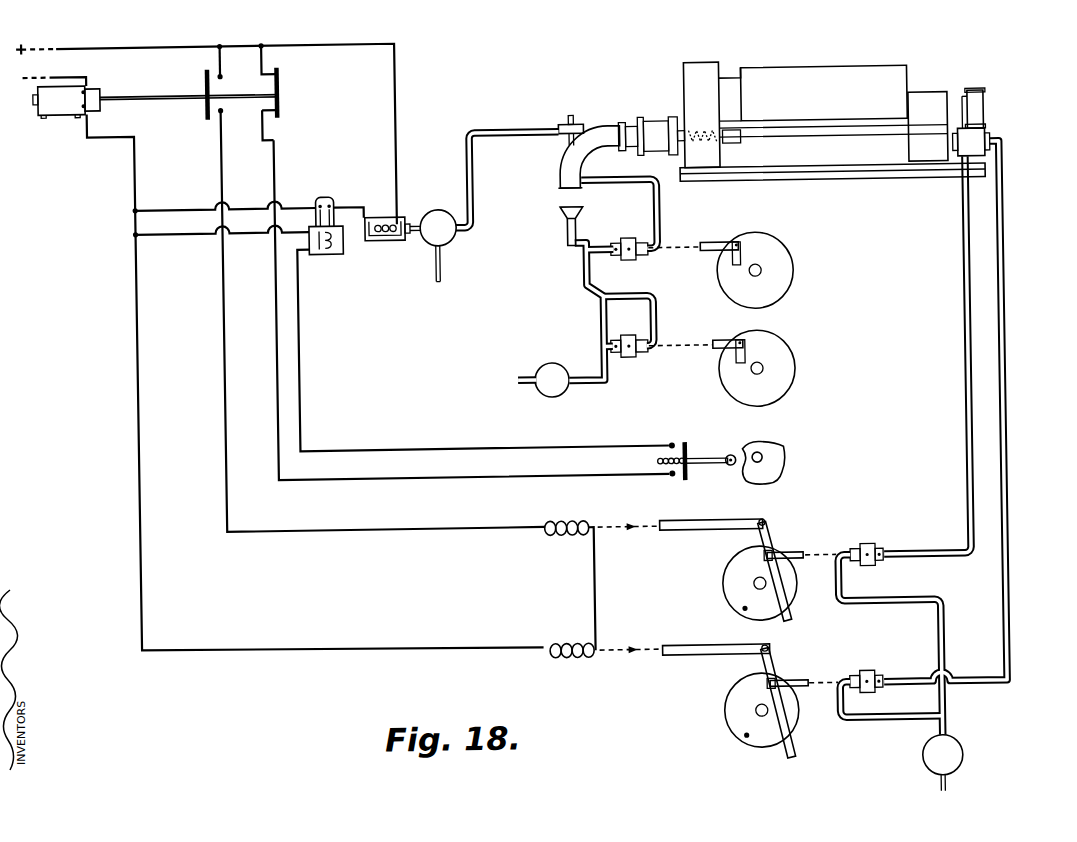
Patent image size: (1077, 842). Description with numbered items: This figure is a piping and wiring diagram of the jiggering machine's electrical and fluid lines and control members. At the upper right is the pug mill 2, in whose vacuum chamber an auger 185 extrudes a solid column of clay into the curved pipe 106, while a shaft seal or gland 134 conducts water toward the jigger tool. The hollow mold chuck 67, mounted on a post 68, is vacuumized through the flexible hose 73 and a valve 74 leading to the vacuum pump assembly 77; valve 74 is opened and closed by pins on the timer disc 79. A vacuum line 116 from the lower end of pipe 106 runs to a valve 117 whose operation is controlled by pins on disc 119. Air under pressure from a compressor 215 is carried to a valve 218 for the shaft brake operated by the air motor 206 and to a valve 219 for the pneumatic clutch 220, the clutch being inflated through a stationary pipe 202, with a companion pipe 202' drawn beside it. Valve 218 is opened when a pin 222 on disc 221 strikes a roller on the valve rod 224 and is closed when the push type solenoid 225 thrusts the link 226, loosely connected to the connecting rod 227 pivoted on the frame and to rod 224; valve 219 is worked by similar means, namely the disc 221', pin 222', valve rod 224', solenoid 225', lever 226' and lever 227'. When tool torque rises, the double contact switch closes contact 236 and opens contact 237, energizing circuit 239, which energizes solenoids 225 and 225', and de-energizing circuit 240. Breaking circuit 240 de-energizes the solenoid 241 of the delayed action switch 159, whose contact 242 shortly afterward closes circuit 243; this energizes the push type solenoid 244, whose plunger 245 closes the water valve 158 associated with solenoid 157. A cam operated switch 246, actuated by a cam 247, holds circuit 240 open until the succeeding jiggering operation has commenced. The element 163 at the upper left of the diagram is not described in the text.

The pug mill 2 is at (805, 67).
The hollow mold chuck 67 is at (586, 213).
The post 68 is at (571, 229).
The flexible hose 73 is at (594, 246).
The valve 74 is at (631, 360).
The vacuum pump assembly 77 is at (558, 364).
The timer disc 79 is at (794, 352).
The curved pipe 106 is at (565, 173).
The vacuum line 116 is at (666, 202).
The valve 117 is at (631, 262).
The disc 119 is at (795, 288).
The shaft seal or gland 134 is at (572, 124).
The solenoid 157 is at (392, 238).
The water valve 158 is at (459, 235).
The delayed action switch 159 is at (324, 158).
The motor 163 is at (67, 104).
The auger 185 is at (699, 132).
The stationary pipe 202 is at (971, 431).
The pipe 202' is at (924, 355).
The air motor 206 is at (988, 104).
The compressor 215 is at (957, 759).
The valve 218 is at (864, 675).
The valve 219 is at (866, 548).
The pneumatically operated clutch 220 is at (995, 137).
The disc 221 is at (730, 711).
The disc 221' is at (739, 582).
The pin 222 is at (701, 734).
The pin 222' is at (709, 600).
The valve rod 224 is at (802, 672).
The valve rod 224' is at (802, 547).
The push type solenoid 225 is at (605, 672).
The push type solenoid 225' is at (592, 512).
The link 226 is at (715, 638).
The lever 226' is at (712, 512).
The connecting rod 227 is at (801, 695).
The lever 227' is at (799, 566).
The contact 236 is at (210, 112).
The contact 237 is at (287, 102).
The circuit 239 is at (358, 512).
The circuit 240 is at (278, 331).
The solenoid 241 is at (335, 251).
The contact 242 is at (337, 197).
The circuit 243 is at (368, 42).
The push type solenoid 244 is at (389, 217).
The plunger 245 is at (431, 218).
The cam operated switch 246 is at (689, 479).
The cam 247 is at (790, 456).